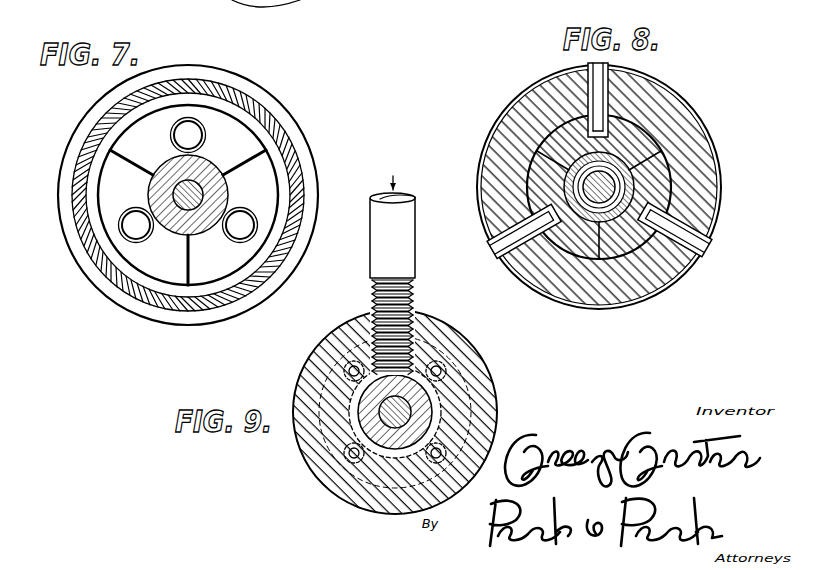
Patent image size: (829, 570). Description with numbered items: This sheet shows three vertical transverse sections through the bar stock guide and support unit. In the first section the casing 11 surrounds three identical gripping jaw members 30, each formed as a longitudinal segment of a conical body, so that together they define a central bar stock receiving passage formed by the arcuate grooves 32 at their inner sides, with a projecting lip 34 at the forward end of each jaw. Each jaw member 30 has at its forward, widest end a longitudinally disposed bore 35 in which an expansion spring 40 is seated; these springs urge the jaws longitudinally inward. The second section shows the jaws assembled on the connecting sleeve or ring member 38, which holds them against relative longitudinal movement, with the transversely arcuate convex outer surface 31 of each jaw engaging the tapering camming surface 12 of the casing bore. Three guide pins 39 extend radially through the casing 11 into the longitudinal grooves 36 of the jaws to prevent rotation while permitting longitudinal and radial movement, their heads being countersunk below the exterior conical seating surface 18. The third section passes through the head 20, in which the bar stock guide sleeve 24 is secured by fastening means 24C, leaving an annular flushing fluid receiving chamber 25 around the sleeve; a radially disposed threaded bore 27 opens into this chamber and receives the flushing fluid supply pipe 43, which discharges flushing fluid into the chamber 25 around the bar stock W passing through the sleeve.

In FIG. 7, the casing 11 is at (291, 111).
In FIG. 8, the casing 11 is at (701, 123).
In FIG. 9, the casing 11 is at (495, 376).
In FIG. 8, the conical surface 12 is at (638, 282).
In FIG. 8, the conical surface 18 is at (620, 112).
In FIG. 9, the head 20 is at (475, 435).
In FIG. 9, the bar stock guide tube or sleeve 24 is at (423, 427).
In FIG. 9, the fastening means 24C is at (445, 365).
In FIG. 9, the flushing fluid receiving chamber 25 is at (348, 402).
In FIG. 9, the internally screw threaded bore 27 is at (412, 340).
In FIG. 7, the gripping jaw members 30 is at (258, 207).
In FIG. 8, the gripping jaw members 30 is at (556, 145).
In FIG. 8, the convex outer surface 31 is at (568, 110).
In FIG. 7, the bar stock receiving groove 32 is at (196, 173).
In FIG. 7, the projecting lip 34 is at (217, 190).
In FIG. 7, the longitudinally disposed bore 35 is at (188, 137).
In FIG. 8, the longitudinal groove 36 is at (583, 135).
In FIG. 8, the connecting sleeve or ring member 38 is at (566, 183).
In FIG. 8, the guide pins 39 is at (597, 102).
In FIG. 7, the expansion springs 40 is at (187, 118).
In FIG. 9, the flushing fluid supply pipe 43 is at (400, 268).
In FIG. 7, the workpiece W is at (201, 198).
In FIG. 8, the workpiece W is at (637, 140).
In FIG. 9, the workpiece W is at (381, 421).